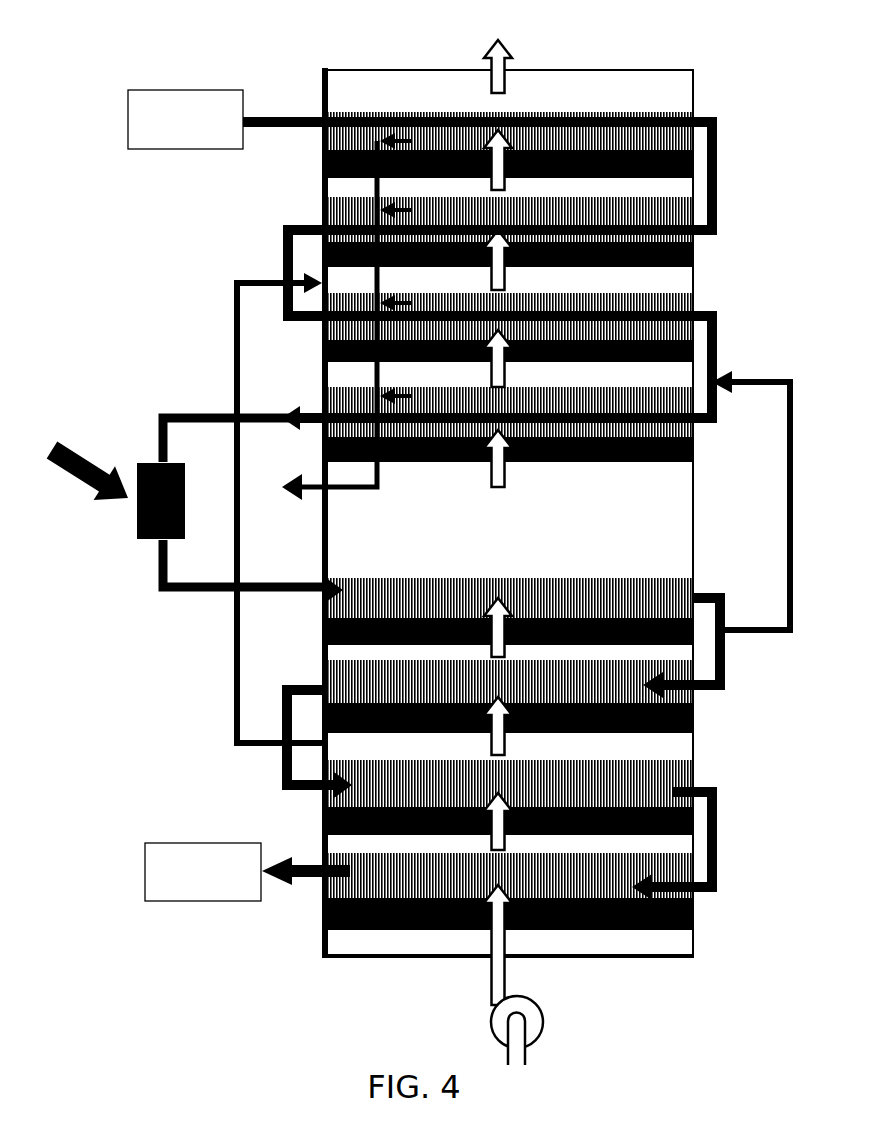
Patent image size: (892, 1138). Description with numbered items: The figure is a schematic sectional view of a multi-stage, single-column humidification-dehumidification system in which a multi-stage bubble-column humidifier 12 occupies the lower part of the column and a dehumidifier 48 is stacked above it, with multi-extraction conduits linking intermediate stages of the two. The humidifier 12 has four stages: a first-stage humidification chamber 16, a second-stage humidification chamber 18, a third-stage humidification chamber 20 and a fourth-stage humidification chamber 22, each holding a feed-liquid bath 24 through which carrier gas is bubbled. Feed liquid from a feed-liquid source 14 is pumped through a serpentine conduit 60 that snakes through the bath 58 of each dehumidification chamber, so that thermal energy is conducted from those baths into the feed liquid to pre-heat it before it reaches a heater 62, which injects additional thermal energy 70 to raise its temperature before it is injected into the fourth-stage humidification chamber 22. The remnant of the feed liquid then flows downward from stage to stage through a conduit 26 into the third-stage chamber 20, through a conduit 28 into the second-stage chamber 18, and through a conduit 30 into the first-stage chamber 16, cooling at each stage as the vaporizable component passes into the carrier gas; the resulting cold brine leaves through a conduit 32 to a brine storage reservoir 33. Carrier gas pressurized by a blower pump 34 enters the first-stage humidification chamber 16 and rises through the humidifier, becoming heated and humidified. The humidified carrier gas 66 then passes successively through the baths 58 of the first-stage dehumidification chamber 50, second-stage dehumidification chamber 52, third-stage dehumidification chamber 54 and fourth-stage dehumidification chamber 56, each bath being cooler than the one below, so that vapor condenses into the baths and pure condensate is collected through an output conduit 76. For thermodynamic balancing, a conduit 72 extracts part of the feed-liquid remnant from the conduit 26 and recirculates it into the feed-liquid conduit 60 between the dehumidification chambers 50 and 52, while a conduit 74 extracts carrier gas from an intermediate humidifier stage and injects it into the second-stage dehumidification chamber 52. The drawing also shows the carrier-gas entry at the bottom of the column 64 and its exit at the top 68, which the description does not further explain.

The multi-stage bubble-column humidifier 12 is at (224, 673).
The feed-liquid source 14 is at (185, 119).
The first-stage humidification chamber 16 is at (306, 843).
The second-stage humidification chamber 18 is at (702, 757).
The third-stage humidification chamber 20 is at (311, 664).
The fourth-stage humidification chamber 22 is at (704, 568).
The bath 24 is at (510, 738).
The conduit 26 is at (728, 668).
The conduit 28 is at (284, 778).
The conduit 30 is at (718, 840).
The conduit 32 is at (301, 880).
The brine storage reservoir 33 is at (203, 872).
The blower pump 34 is at (502, 1004).
The dehumidifier 48 is at (290, 66).
The first-stage dehumidification chamber 50 is at (313, 382).
The second-stage dehumidification chamber 52 is at (702, 287).
The third-stage dehumidification chamber 54 is at (304, 195).
The fourth-stage dehumidification chamber 56 is at (706, 100).
The bath 58 is at (510, 274).
The serpentine conduit 60 is at (297, 128).
The heater 62 is at (186, 493).
The air inlet 64 is at (498, 945).
The carrier gas 66 is at (504, 470).
The air outlet 68 is at (509, 58).
The thermal energy 70 is at (70, 477).
The multi-extraction conduit 72 is at (790, 512).
The multi-extraction conduit 74 is at (237, 323).
The output conduit 76 is at (357, 490).